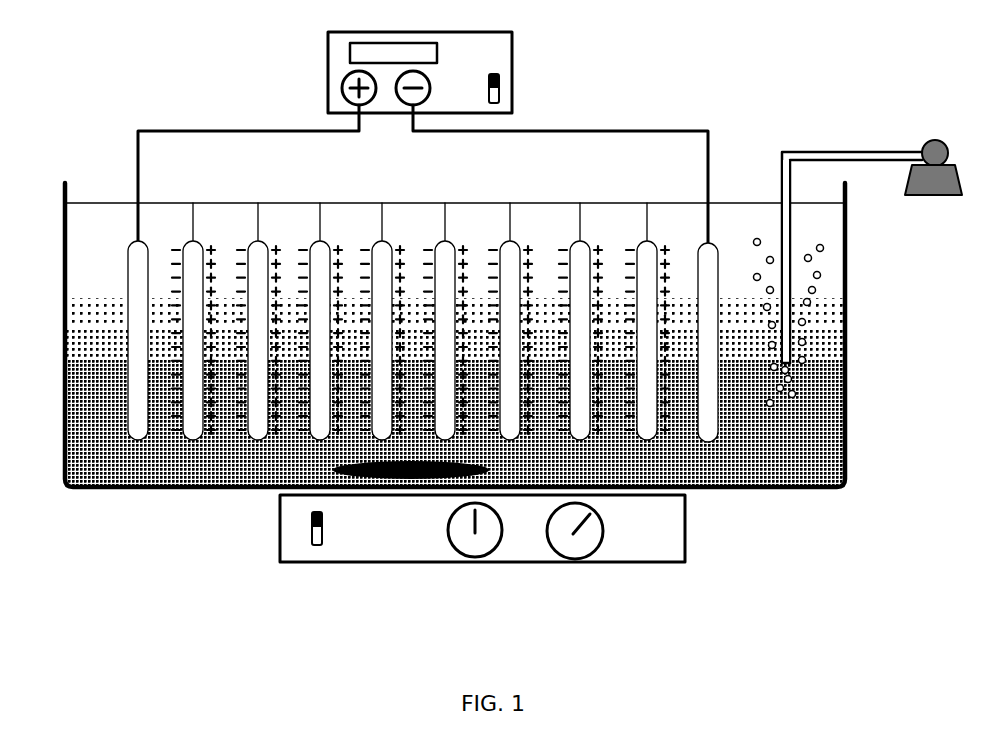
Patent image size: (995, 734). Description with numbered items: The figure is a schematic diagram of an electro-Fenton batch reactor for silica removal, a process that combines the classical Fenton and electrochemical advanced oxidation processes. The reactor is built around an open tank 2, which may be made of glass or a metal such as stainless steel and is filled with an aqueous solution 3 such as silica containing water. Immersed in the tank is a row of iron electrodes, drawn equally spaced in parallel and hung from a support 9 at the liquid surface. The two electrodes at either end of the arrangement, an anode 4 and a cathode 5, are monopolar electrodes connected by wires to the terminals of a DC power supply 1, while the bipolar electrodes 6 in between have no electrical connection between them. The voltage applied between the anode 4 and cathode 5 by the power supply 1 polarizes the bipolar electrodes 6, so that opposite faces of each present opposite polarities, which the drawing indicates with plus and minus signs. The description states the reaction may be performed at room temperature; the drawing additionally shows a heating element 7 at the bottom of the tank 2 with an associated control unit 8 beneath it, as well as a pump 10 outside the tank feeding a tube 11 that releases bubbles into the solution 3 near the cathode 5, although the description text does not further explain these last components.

The power supply 1 is at (423, 137).
The electrolytic tank 2 is at (443, 335).
The electrolyte solution 3 is at (455, 344).
The anode electrode 4 is at (129, 340).
The cathode electrode 5 is at (715, 342).
The intermediate bipolar electrodes 6 is at (420, 340).
The heater 7 is at (420, 471).
The temperature controller 8 is at (482, 528).
The electrode hangers 9 is at (420, 208).
The air pump 10 is at (933, 182).
The aeration tube with bubbles 11 is at (838, 295).